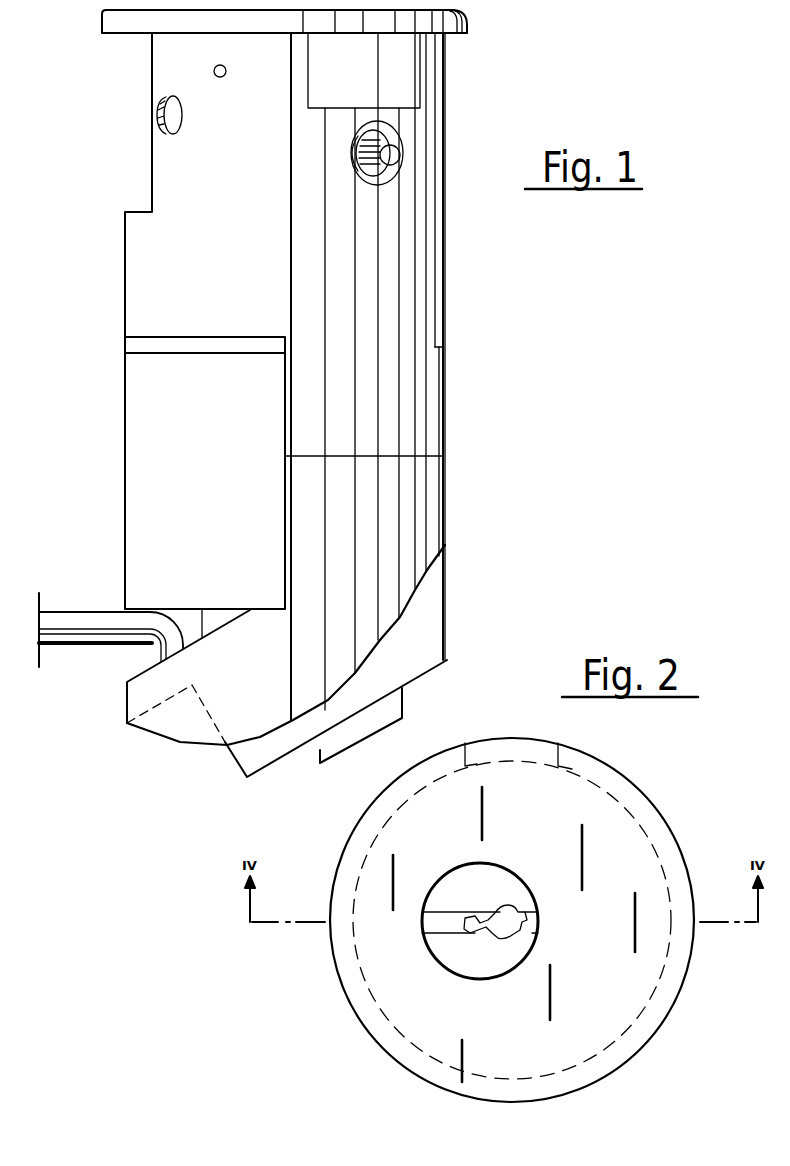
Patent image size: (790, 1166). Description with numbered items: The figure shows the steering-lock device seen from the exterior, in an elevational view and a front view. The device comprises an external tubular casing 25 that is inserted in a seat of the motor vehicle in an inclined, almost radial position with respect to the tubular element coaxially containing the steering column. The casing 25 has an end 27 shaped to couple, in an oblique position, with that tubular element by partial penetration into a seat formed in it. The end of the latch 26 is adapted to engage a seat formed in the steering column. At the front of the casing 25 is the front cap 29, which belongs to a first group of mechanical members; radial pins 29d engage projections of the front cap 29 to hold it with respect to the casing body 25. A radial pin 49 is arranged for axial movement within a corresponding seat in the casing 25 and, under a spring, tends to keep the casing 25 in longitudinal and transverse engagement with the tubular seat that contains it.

In FIG. 1, the front cap 29 is at (466, 40).
In FIG. 2, the front cap 29 is at (622, 830).
In FIG. 1, the radial pins 29d is at (214, 70).
In FIG. 1, the radial pin 49 is at (397, 152).
In FIG. 1, the external tubular casing 25 is at (388, 310).
In FIG. 1, the end 27 is at (412, 510).
In FIG. 1, the latch 26 is at (387, 708).